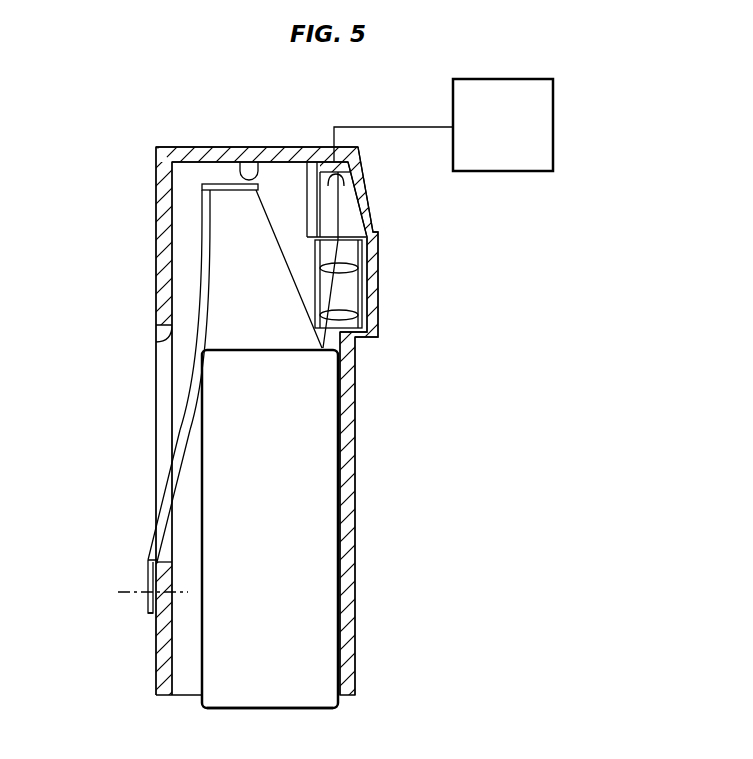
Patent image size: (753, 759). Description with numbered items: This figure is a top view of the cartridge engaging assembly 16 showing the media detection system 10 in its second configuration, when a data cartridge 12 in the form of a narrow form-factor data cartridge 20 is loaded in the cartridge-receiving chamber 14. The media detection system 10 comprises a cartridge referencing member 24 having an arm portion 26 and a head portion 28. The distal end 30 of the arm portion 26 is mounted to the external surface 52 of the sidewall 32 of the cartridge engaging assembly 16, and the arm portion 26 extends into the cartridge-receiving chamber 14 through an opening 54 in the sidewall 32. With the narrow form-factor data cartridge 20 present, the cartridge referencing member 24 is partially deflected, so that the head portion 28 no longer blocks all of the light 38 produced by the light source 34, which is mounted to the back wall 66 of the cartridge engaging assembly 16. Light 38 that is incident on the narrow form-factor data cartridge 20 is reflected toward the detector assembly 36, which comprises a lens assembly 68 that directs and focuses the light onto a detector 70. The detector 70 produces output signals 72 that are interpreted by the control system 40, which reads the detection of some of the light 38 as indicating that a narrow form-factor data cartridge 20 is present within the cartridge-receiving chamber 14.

The media detection system 10 is at (239, 408).
The data cartridge 12 is at (330, 710).
The cartridge-receiving chamber 14 is at (284, 335).
The cartridge engaging assembly 16 is at (357, 588).
The narrow form-factor data cartridge 20 is at (283, 543).
The cartridge referencing member 24 is at (212, 280).
The arm portion 26 is at (182, 405).
The head portion 28 is at (252, 192).
The distal end 30 is at (150, 573).
The sidewall 32 is at (157, 653).
The light source 34 is at (238, 172).
The detector assembly 36 is at (377, 272).
The light 38 is at (280, 248).
The control system 40 is at (554, 103).
The external surface 52 is at (152, 617).
The opening 54 is at (156, 342).
The back wall 66 is at (189, 146).
The lens assembly 68 is at (372, 306).
The detector 70 is at (344, 186).
The output signals 72 is at (406, 127).